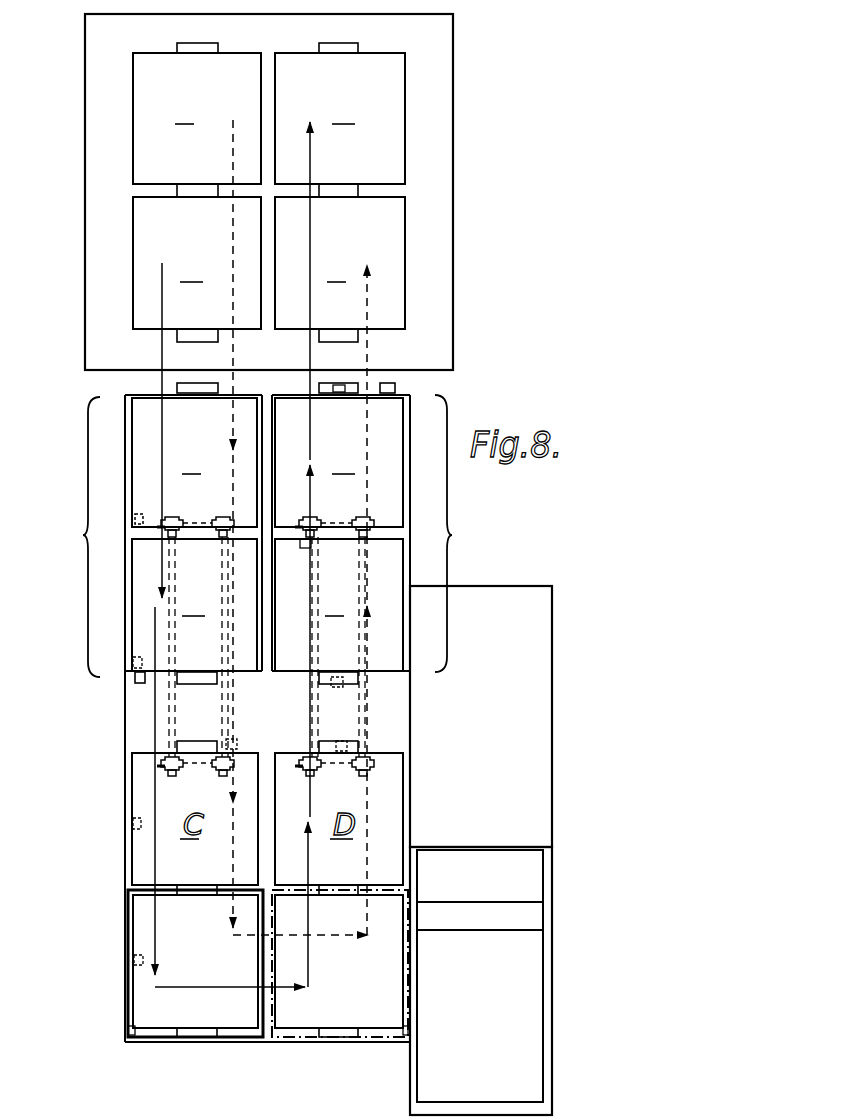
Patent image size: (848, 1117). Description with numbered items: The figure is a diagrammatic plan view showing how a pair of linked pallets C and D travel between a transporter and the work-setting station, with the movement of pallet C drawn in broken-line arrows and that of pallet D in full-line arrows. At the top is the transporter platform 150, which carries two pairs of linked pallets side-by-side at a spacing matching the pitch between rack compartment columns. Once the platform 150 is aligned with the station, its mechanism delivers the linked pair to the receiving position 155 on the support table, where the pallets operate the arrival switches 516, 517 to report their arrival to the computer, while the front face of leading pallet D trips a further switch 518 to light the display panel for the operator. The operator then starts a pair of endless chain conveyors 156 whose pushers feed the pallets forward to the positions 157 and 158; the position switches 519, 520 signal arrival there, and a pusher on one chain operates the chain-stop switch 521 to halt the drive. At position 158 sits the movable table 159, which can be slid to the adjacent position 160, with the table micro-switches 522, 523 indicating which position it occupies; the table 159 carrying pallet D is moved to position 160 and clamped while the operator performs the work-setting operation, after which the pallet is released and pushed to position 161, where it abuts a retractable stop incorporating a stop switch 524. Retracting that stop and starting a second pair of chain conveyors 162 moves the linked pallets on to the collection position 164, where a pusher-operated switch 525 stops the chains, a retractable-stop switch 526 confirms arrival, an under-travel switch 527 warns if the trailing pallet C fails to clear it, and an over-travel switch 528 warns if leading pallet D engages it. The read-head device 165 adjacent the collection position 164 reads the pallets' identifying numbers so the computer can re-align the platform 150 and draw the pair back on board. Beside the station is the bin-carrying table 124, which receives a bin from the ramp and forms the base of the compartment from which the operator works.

The platform 150 is at (438, 250).
The receiving position 155 is at (223, 718).
The collection position 164 is at (467, 533).
The read-head device 165 is at (267, 428).
The switch S26 526 is at (340, 390).
The switch S28 528 is at (396, 388).
The switch S16 516 is at (141, 527).
The switch S25 525 is at (311, 548).
The switch S17 517 is at (132, 668).
The switch S18 518 is at (143, 684).
The endless chain conveyors 156 is at (222, 700).
The switch S21 521 is at (238, 746).
The switch S27 527 is at (345, 688).
The chain conveyors 162 is at (318, 716).
The switch S24 524 is at (348, 746).
The pallet position 161 is at (412, 812).
The pallet position 157 is at (126, 808).
The switch S19 519 is at (133, 826).
The switch S20 520 is at (132, 960).
The pallet position 158 is at (126, 1000).
The micro-switch S22 522 is at (126, 1031).
The movable table 159 is at (156, 1043).
The adjacent position 160 is at (412, 1003).
The micro-switch S23 523 is at (406, 1031).
The bin-carrying table 124 is at (520, 985).